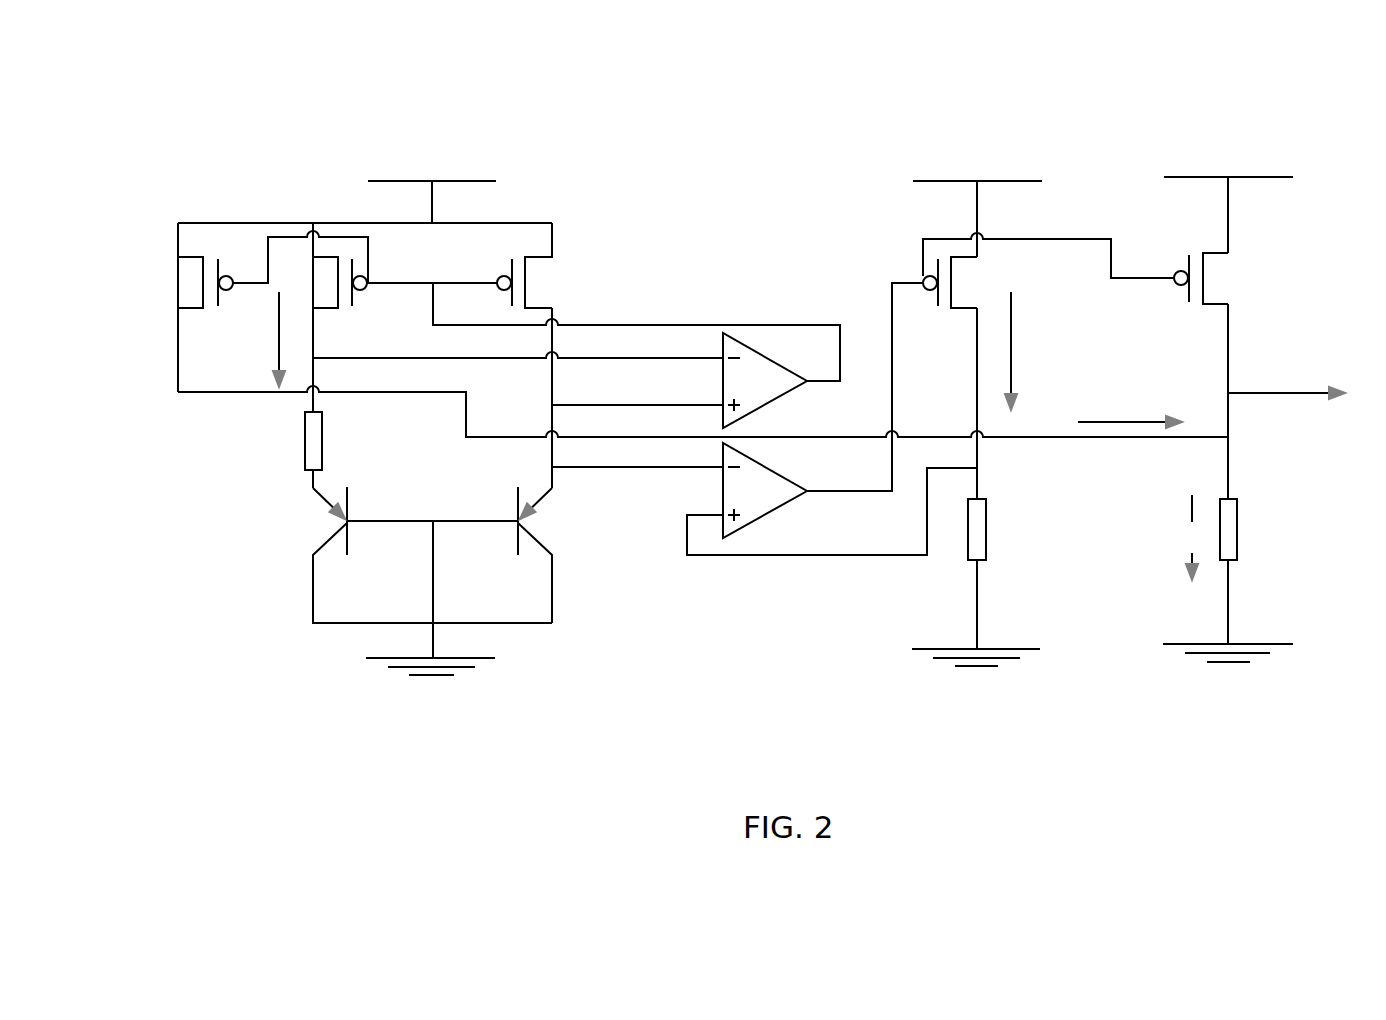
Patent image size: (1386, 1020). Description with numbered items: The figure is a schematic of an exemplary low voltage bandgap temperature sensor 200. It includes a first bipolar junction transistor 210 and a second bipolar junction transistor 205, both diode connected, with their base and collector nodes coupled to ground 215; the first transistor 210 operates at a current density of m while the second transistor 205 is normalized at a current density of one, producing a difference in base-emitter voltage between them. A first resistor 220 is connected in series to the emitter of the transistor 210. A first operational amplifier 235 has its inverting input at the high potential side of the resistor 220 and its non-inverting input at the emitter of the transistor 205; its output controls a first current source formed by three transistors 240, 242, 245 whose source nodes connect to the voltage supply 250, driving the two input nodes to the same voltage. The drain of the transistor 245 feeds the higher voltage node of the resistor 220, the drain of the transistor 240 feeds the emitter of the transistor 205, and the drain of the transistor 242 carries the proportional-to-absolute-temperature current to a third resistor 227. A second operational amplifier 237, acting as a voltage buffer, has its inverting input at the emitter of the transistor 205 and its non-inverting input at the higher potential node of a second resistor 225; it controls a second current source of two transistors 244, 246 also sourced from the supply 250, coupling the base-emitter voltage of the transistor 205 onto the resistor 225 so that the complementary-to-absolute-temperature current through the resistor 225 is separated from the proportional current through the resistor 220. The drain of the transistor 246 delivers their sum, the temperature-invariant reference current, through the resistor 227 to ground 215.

The low voltage bandgap temperature sensor 200 is at (217, 97).
The voltage supply 250 is at (503, 173).
The transistor 240 is at (564, 253).
The transistor 242 is at (162, 275).
The transistor 245 is at (358, 322).
The transistor 244 is at (905, 263).
The transistor 246 is at (1233, 277).
The resistor 220 is at (295, 448).
The first bipolar junction transistor 210 is at (292, 518).
The second bipolar junction transistor 205 is at (565, 507).
The first operational amplifier 235 is at (785, 400).
The second operational amplifier 237 is at (780, 512).
The resistor 225 is at (1003, 535).
The resistor 227 is at (1248, 540).
The ground 215 is at (505, 665).